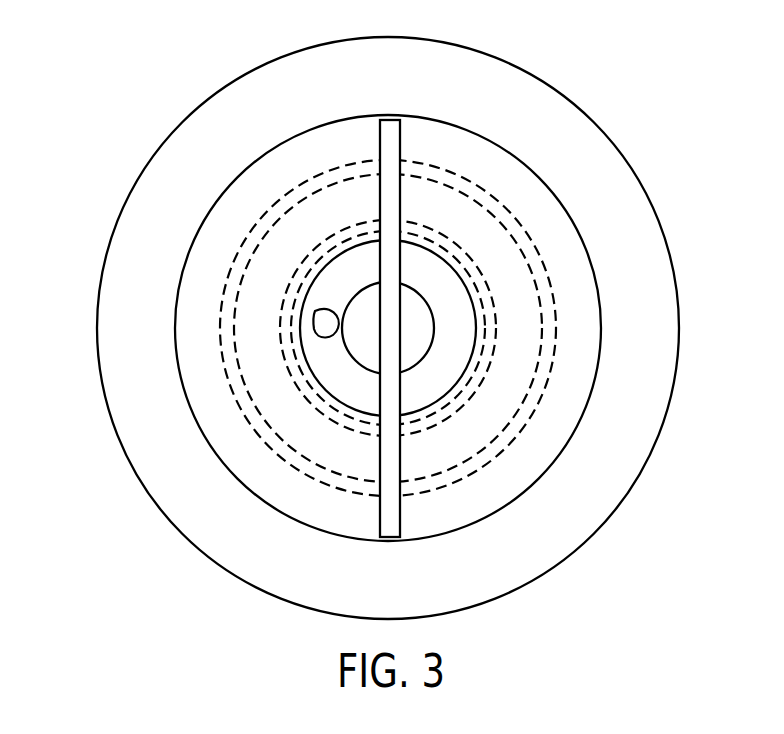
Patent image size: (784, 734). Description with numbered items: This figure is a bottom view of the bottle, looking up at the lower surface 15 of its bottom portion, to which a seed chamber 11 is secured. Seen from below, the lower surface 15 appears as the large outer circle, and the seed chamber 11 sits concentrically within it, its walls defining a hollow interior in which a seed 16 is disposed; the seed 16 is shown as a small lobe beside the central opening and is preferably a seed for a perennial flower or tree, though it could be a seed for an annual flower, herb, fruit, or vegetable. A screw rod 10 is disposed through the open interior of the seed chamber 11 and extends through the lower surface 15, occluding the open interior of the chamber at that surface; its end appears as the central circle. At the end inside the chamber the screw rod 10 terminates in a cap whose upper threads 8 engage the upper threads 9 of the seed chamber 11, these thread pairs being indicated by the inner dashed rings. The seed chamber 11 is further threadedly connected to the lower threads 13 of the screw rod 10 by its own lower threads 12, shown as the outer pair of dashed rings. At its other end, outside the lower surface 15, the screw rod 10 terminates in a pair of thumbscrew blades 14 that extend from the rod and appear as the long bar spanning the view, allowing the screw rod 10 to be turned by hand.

The upper threads of cap 8 is at (491, 305).
The upper threads of seed chamber 9 is at (498, 325).
The screw rod 10 is at (370, 302).
The seed chamber 11 is at (327, 290).
The lower threads of seed chamber 12 is at (270, 444).
The lower threads of screw rod 13 is at (260, 413).
The thumbscrew blades 14 is at (390, 512).
The lower surface 15 is at (630, 208).
The seed 16 is at (320, 319).